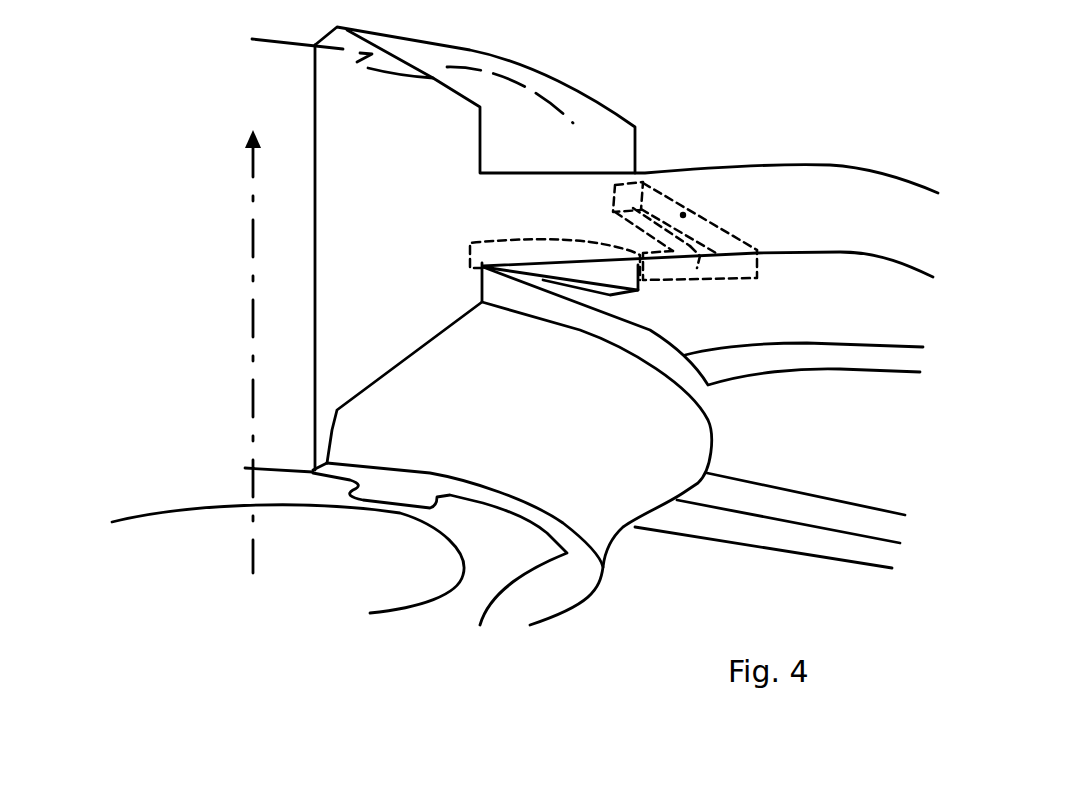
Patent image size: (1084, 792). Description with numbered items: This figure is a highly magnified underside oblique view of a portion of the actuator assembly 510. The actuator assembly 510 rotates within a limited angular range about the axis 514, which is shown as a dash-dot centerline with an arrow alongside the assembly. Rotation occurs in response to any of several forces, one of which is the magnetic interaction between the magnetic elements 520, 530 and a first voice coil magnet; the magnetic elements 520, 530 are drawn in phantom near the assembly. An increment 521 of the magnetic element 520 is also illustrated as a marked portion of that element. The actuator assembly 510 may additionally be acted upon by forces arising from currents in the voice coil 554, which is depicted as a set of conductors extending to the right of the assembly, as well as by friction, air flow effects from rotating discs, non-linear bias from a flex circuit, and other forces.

The actuator assembly 510 is at (795, 86).
The axis 514 is at (249, 327).
The magnetic element 520 is at (653, 195).
The increment 521 is at (694, 224).
The magnetic element 530 is at (493, 247).
The voice coil 554 is at (762, 367).